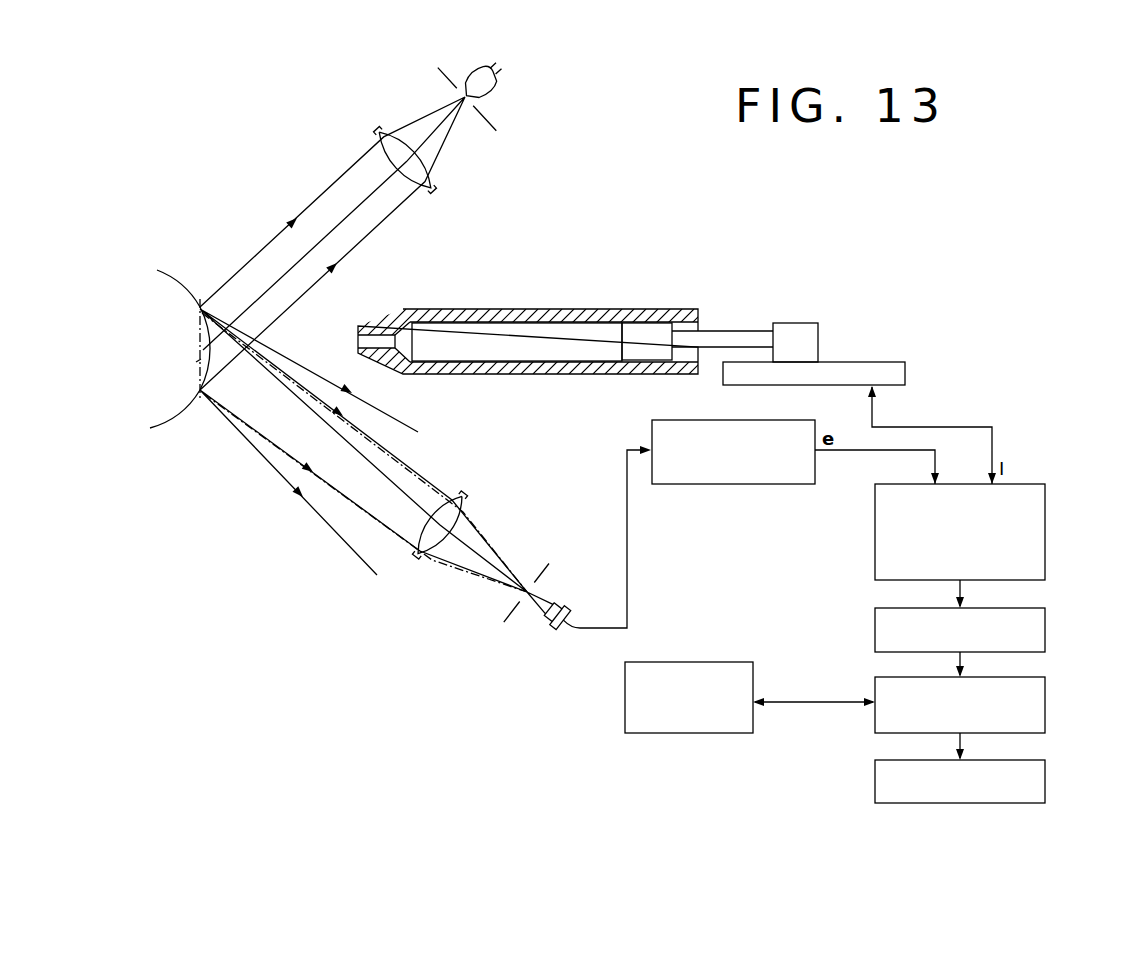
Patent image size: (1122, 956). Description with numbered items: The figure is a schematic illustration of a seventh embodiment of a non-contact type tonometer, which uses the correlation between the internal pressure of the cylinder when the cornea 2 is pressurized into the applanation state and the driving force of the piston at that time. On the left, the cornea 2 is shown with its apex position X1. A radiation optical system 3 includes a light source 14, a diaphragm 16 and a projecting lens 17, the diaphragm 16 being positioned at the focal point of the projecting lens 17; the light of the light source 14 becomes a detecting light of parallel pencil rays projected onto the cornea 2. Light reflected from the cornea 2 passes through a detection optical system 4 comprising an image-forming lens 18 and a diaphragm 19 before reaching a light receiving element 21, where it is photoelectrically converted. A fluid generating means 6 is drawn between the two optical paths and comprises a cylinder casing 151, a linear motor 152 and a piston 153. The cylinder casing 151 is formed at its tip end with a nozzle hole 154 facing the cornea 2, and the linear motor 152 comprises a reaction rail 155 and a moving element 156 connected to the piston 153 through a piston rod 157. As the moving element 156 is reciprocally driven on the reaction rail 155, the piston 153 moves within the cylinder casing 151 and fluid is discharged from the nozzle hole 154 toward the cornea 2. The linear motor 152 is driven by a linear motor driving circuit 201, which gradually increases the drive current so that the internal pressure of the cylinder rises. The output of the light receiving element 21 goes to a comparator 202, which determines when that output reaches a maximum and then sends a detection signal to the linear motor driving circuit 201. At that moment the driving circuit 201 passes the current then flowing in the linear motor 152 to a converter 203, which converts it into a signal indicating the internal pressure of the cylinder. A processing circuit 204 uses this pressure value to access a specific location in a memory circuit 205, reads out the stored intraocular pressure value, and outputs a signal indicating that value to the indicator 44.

The cornea 2 is at (195, 297).
The corneal apex position X1 is at (197, 362).
The radiation optical system 3 is at (336, 168).
The detection optical system 4 is at (423, 562).
The fluid generating means 6 is at (587, 303).
The light source 14 is at (472, 85).
The diaphragm 16 is at (494, 122).
The projecting lens 17 is at (435, 183).
The image-forming lens 18 is at (460, 500).
The diaphragm 19 is at (545, 566).
The light receiving element 21 is at (556, 632).
The indicator 44 is at (1048, 783).
The cylinder casing 151 is at (518, 308).
The linear motor 152 is at (779, 319).
The piston 153 is at (658, 325).
The nozzle hole 154 is at (380, 336).
The reaction rail 155 is at (893, 368).
The moving element 156 is at (800, 330).
The piston rod 157 is at (738, 333).
The linear motor driving circuit 201 is at (1047, 490).
The comparator 202 is at (797, 486).
The converter 203 is at (1047, 616).
The processing circuit 204 is at (1048, 697).
The memory circuit 205 is at (734, 662).